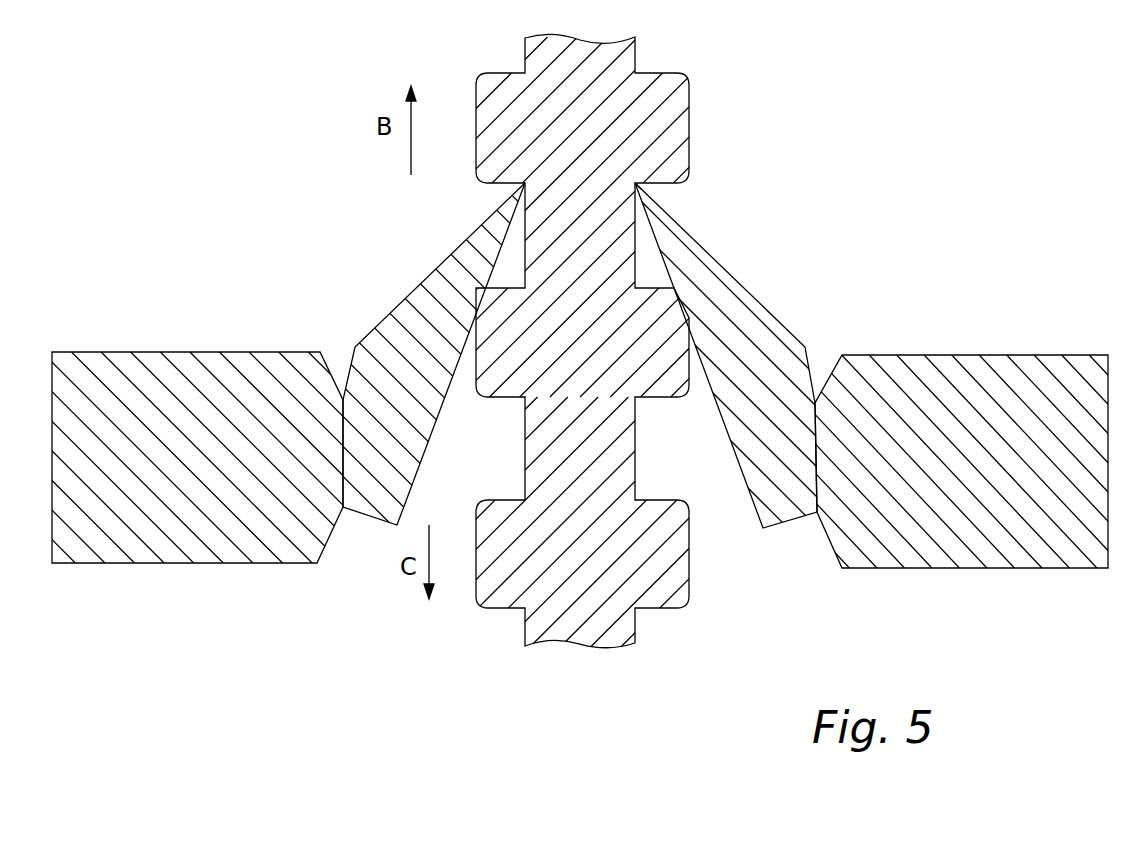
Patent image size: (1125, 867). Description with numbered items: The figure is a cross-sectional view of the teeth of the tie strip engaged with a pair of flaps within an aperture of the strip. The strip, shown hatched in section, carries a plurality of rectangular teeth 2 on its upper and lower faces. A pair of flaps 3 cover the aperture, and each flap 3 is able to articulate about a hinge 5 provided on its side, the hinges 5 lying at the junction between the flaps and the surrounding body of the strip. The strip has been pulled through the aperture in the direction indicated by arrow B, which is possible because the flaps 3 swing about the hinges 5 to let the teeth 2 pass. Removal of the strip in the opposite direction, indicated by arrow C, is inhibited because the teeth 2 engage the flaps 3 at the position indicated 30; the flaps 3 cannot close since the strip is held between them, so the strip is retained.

The rectangular teeth 2 is at (689, 130).
The flaps 3 is at (420, 283).
The engagement position 30 is at (635, 183).
The hinge 5 is at (343, 400).